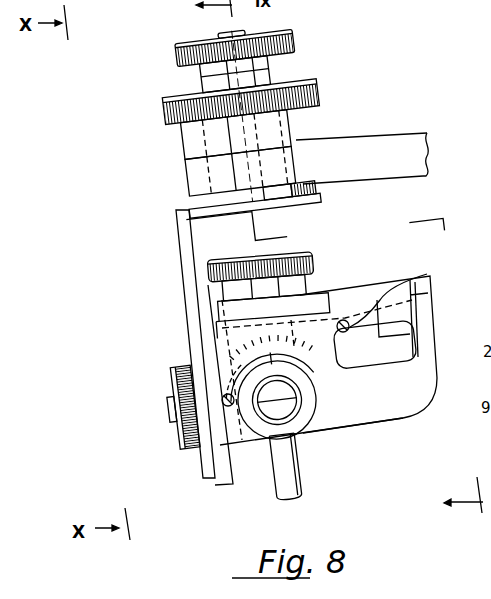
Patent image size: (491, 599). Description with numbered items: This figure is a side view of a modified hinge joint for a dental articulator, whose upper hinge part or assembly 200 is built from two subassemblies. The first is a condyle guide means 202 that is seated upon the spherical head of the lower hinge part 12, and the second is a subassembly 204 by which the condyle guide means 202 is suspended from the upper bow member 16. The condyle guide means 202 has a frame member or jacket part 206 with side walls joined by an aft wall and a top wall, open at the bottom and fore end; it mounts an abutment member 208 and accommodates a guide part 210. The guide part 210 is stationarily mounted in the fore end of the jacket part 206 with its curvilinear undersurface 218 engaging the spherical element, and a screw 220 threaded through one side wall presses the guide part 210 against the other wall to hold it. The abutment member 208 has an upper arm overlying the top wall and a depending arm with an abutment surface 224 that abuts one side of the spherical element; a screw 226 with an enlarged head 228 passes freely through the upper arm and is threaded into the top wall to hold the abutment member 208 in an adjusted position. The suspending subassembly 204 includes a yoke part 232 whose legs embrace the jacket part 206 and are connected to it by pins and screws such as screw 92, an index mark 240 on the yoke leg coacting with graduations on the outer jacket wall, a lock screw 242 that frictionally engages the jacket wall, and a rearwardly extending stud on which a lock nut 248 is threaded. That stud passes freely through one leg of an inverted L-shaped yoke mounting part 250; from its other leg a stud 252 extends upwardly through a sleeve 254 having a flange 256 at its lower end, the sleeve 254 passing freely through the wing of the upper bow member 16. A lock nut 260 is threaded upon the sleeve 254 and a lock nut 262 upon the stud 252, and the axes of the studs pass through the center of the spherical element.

The lower hinge part 12 is at (318, 457).
The upper bow member 16 is at (375, 158).
The screw 92 is at (313, 405).
The upper hinge part 200 is at (137, 267).
The condyle guide means 202 is at (472, 329).
The second subassembly 204 is at (357, 131).
The jacket part 206 is at (222, 337).
The abutment member 208 is at (418, 307).
The guide part 210 is at (373, 360).
The curvilinear undersurface 218 is at (384, 362).
The screw 220 is at (424, 279).
The abutment surface 224 is at (343, 420).
The screw 226 is at (305, 298).
The enlarged head 228 is at (313, 262).
The yoke part 232 is at (250, 450).
The index mark 240 is at (316, 373).
The lock screw 242 is at (224, 396).
The lock nut 248 is at (176, 447).
The yoke mounting part 250 is at (185, 292).
The stud 252 is at (186, 150).
The sleeve 254 is at (190, 181).
The flange 256 is at (190, 210).
The lock nut 260 is at (317, 98).
The lock nut 262 is at (297, 38).